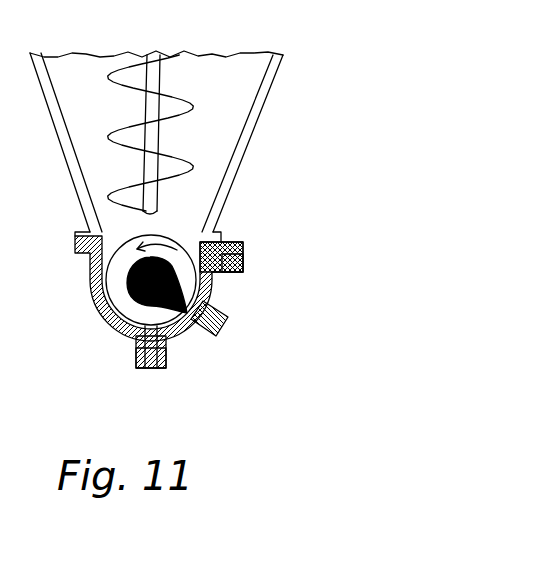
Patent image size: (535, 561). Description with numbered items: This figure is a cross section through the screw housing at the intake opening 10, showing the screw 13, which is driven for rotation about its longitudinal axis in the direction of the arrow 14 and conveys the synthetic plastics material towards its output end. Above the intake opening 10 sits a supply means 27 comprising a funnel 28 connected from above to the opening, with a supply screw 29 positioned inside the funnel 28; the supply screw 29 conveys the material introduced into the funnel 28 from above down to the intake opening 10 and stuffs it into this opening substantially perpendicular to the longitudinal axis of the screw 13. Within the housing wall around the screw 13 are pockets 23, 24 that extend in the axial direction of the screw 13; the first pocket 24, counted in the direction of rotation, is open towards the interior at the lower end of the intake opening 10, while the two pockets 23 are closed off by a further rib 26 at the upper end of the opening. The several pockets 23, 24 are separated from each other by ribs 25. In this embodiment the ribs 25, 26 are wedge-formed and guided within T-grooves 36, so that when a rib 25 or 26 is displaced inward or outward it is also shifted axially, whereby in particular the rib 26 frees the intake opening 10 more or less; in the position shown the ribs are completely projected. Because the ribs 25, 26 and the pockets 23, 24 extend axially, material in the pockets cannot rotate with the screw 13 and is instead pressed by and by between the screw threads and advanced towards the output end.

The intake opening 10 is at (152, 309).
The screw 13 is at (130, 283).
The arrow 14 is at (153, 241).
The pockets 23 is at (183, 338).
The first pocket 24 is at (108, 306).
The ribs 25 is at (156, 370).
The rib 26 is at (221, 239).
The supply means 27 is at (160, 125).
The funnel 28 is at (236, 156).
The supply screw 29 is at (172, 99).
The T-grooves 36 is at (229, 273).